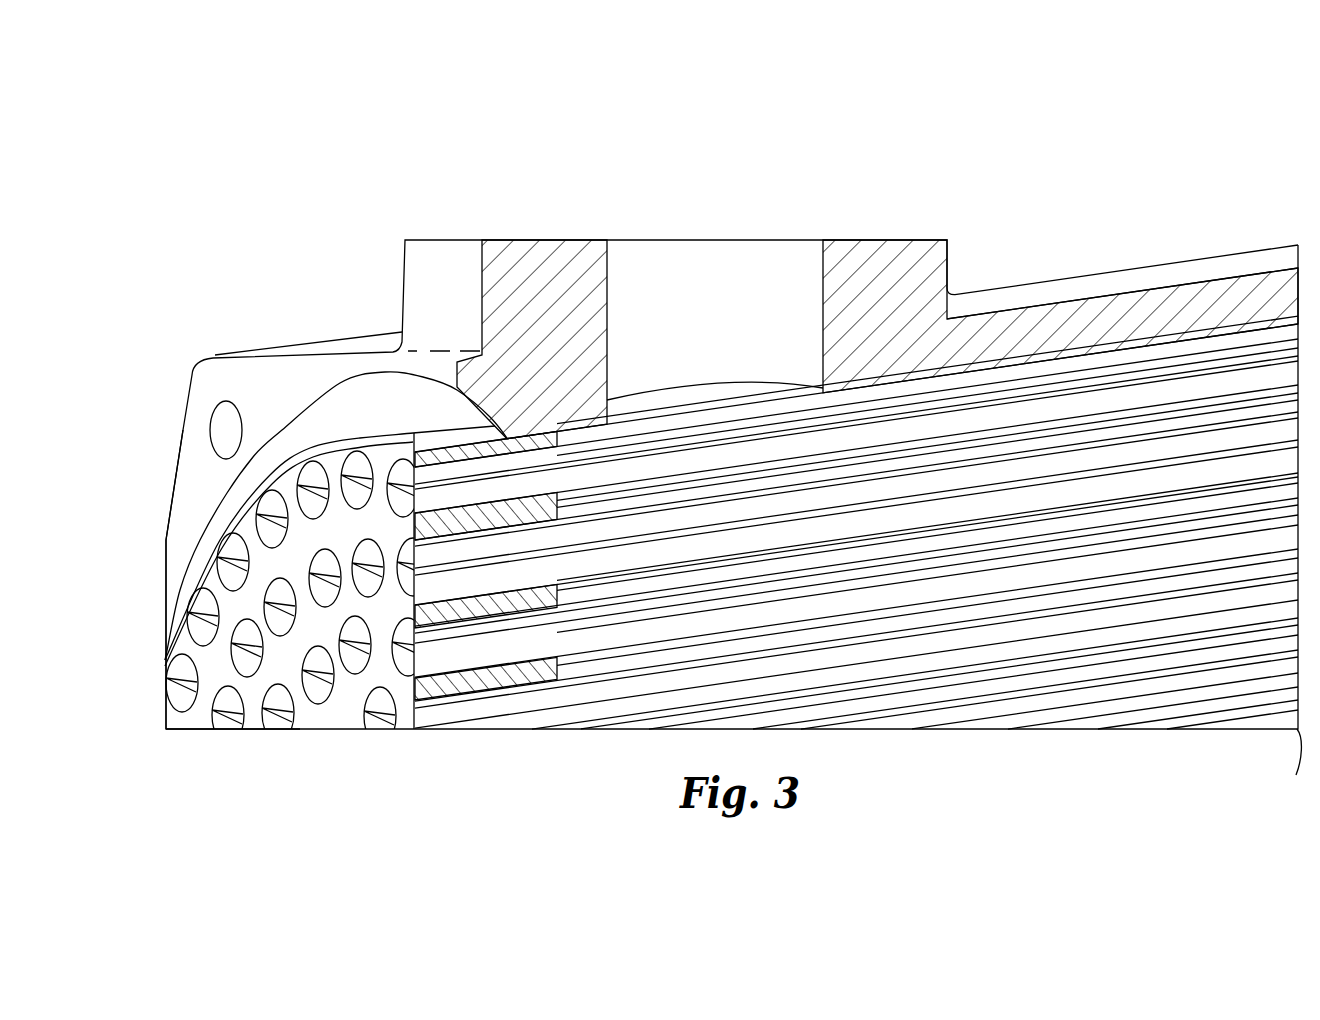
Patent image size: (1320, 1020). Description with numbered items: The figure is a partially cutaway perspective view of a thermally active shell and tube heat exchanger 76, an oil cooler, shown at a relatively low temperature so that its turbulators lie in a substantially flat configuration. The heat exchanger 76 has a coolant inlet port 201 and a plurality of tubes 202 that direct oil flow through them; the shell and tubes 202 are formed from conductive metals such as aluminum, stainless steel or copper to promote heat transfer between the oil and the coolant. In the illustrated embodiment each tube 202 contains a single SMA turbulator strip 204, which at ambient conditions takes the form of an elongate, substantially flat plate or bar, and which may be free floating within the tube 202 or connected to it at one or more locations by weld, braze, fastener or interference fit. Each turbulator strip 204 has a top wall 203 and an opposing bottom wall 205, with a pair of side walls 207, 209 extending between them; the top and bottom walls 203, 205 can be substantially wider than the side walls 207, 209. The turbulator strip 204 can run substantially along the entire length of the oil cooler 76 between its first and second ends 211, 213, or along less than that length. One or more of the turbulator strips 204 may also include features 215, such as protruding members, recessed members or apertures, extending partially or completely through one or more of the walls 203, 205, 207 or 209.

The thermally active shell and tube heat exchanger 76 is at (527, 96).
The coolant inlet port 201 is at (712, 240).
The tubes 202 is at (1058, 495).
The top wall 203 is at (400, 635).
The SMA turbulator strip 204 is at (437, 478).
The bottom wall 205 is at (455, 650).
The side wall 207 is at (412, 540).
The side wall 209 is at (413, 460).
The first end 211 is at (166, 729).
The second end 213 is at (1296, 775).
The features 215 is at (195, 586).